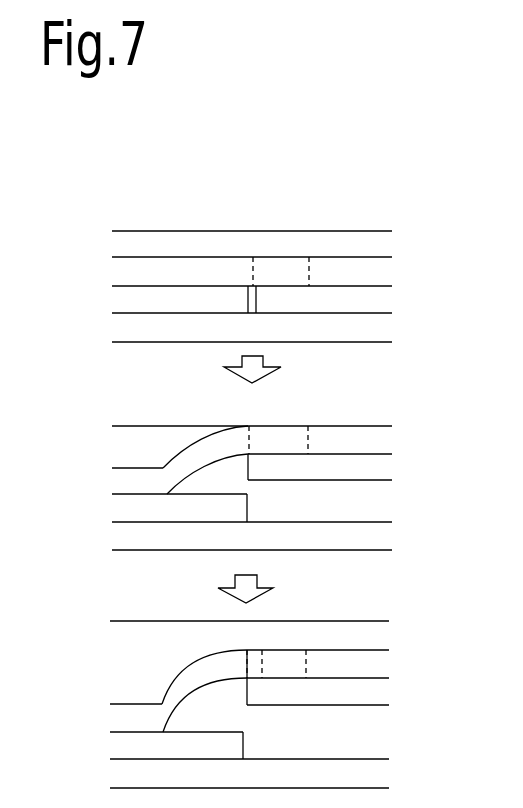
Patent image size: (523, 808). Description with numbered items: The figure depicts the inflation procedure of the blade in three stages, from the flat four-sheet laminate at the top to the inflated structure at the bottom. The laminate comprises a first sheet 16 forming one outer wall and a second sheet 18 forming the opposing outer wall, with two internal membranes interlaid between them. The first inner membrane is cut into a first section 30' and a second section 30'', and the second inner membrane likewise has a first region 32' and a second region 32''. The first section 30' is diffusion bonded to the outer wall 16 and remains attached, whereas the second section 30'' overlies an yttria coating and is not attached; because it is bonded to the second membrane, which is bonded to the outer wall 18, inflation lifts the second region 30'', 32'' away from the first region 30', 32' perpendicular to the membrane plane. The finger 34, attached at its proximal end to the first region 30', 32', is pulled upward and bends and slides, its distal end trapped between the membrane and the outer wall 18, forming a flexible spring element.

The second sheet 18 is at (368, 258).
The first region of second inner membrane 32' is at (145, 259).
The second region of second inner membrane 32'' is at (370, 269).
The first section of first inner membrane 30' is at (144, 305).
The second section of first inner membrane 30'' is at (362, 305).
The first sheet 16 is at (378, 328).
The finger 34 is at (187, 690).